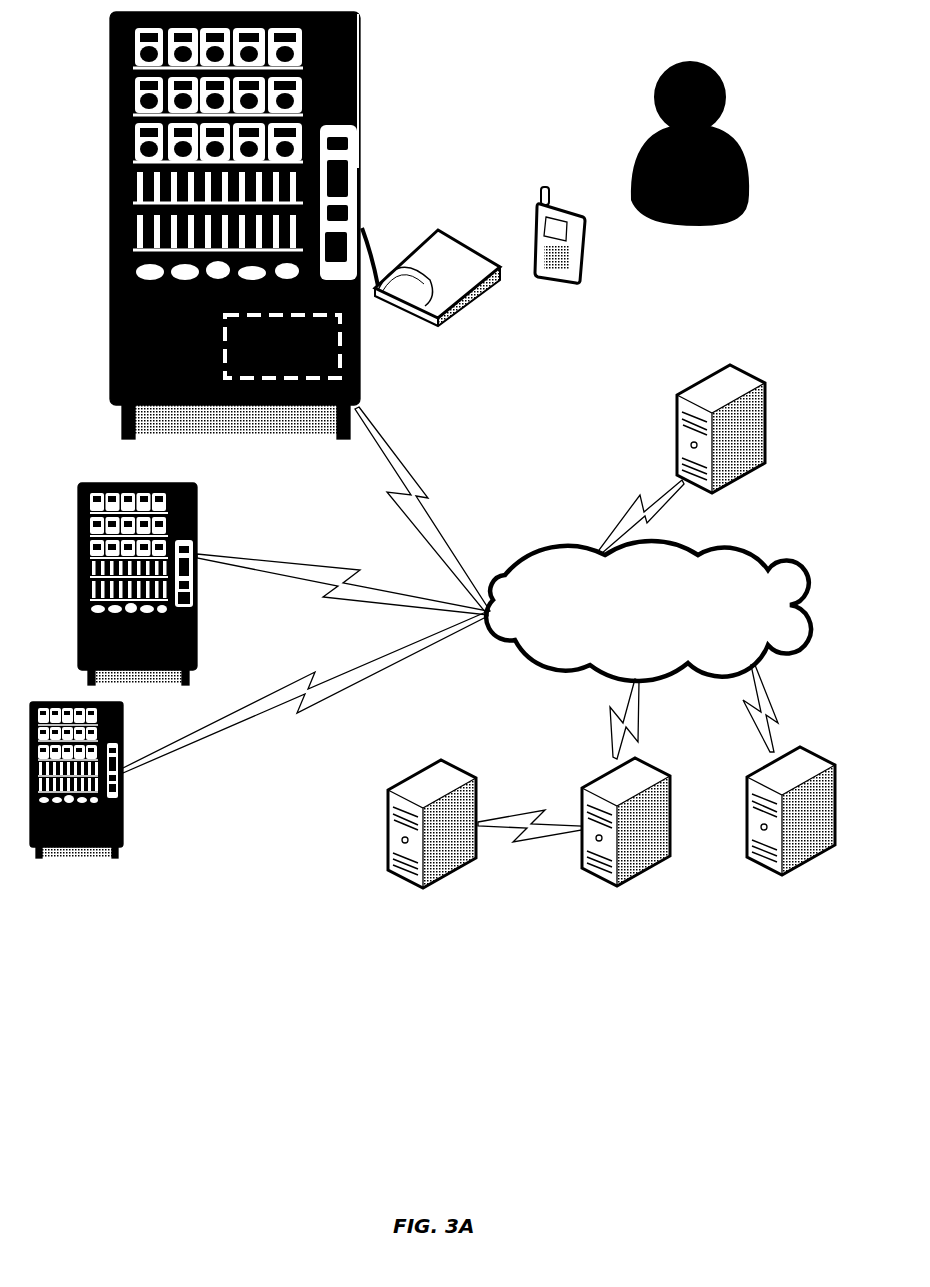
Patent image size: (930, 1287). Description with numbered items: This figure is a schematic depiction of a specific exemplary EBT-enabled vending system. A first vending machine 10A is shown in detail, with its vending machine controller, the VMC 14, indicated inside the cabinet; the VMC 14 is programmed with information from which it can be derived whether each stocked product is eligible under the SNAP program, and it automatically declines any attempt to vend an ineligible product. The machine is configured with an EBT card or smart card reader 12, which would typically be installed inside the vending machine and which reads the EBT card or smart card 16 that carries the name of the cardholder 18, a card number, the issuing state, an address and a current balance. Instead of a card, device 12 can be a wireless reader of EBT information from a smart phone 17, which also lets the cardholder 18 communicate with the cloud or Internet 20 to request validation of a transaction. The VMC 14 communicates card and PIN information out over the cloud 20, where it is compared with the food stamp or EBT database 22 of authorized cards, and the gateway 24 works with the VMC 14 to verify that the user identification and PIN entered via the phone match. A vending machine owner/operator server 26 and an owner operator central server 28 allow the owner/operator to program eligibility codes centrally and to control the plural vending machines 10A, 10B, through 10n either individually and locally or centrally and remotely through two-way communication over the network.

The vending machine 10A is at (248, 225).
The vending machine 10B is at (73, 523).
The vending machine 10n is at (85, 853).
The EBT card or smart card reader 12 is at (430, 240).
The VMC 14 is at (362, 383).
The EBT card or smart card 16 is at (408, 300).
The smart phone 17 is at (575, 283).
The cardholder 18 is at (732, 126).
The cloud or Internet 20 is at (728, 545).
The food stamp (SNAP) or EBT database 22 is at (440, 870).
The gateway 24 is at (625, 868).
The vending machine owner/operator server 26 is at (808, 848).
The owner operator central server 28 is at (732, 386).